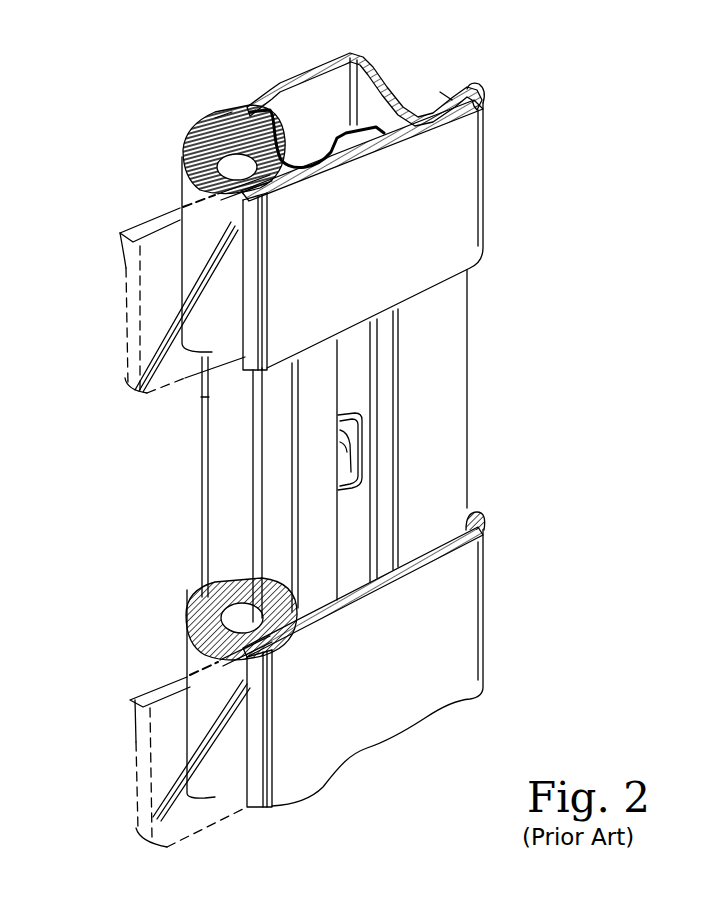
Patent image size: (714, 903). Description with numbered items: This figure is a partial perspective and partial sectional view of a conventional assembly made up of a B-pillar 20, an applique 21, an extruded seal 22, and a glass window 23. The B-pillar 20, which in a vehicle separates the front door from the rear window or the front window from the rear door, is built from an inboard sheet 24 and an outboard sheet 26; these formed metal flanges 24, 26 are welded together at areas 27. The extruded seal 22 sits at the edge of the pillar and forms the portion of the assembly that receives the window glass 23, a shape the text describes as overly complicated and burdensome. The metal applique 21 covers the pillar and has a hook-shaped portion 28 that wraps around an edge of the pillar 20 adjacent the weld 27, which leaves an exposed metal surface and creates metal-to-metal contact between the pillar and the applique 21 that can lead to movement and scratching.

The B-pillar 20 is at (387, 68).
The applique 21 is at (467, 202).
The extruded seal 22 is at (183, 150).
The glass window 23 is at (150, 323).
The inboard sheet 24 is at (311, 78).
The outboard sheet 26 is at (378, 128).
The weld areas 27 is at (222, 122).
The hook-shaped portion of applique 28 is at (486, 96).